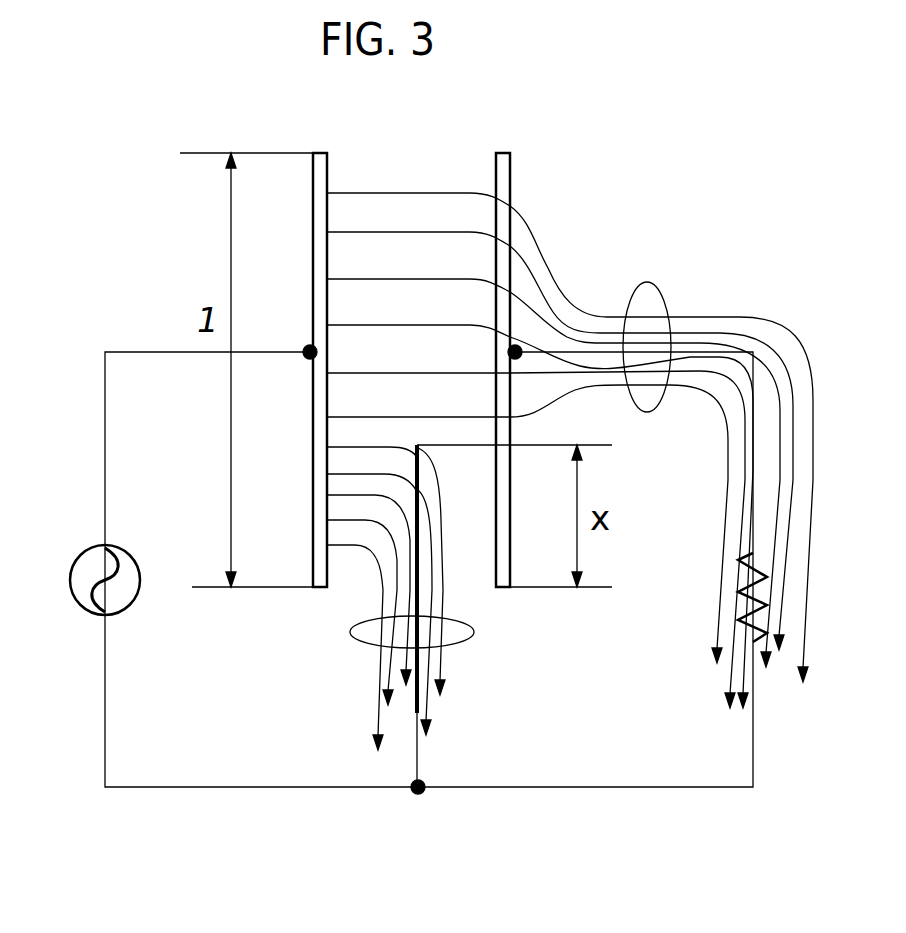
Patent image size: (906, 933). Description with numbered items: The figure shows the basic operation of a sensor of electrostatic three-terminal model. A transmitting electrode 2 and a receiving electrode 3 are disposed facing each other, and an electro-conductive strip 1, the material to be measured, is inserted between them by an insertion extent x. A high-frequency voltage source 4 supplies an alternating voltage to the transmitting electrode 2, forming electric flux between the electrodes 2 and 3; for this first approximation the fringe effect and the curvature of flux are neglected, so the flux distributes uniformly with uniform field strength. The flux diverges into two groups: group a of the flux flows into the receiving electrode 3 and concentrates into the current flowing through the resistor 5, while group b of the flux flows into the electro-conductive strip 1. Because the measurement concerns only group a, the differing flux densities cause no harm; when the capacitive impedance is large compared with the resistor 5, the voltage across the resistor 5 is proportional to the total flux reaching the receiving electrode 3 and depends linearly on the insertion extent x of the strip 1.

The electro-conductive strip 1 is at (415, 688).
The transmitting electrode 2 is at (313, 213).
The receiving electrode 3 is at (510, 185).
The high-frequency voltage source 4 is at (82, 550).
The resistor 5 is at (744, 573).
The group a of the flux a is at (655, 285).
The group b of the flux b is at (470, 635).